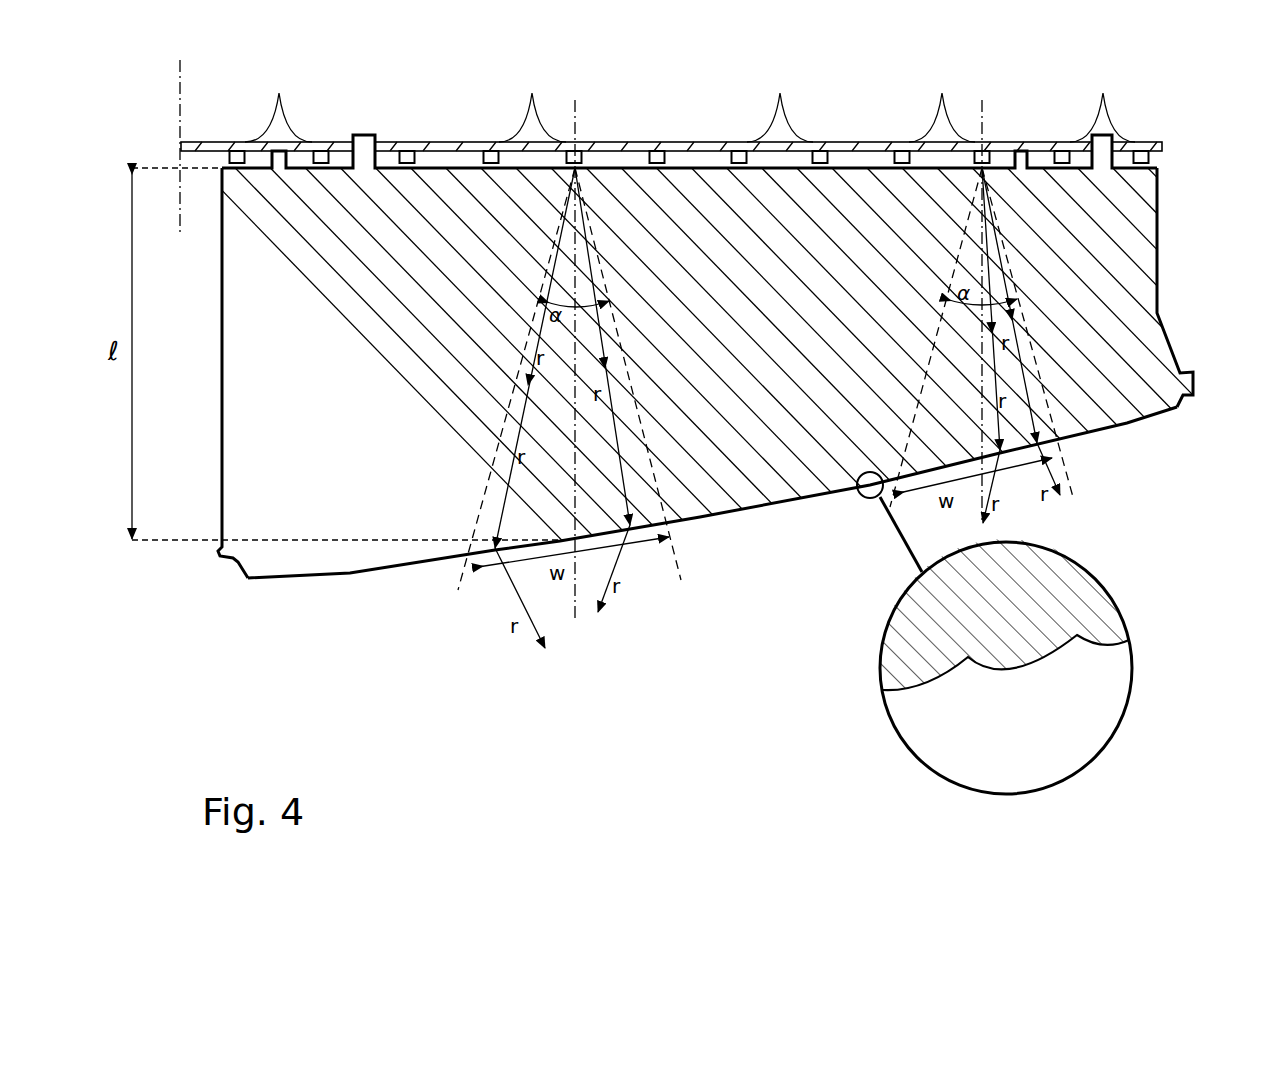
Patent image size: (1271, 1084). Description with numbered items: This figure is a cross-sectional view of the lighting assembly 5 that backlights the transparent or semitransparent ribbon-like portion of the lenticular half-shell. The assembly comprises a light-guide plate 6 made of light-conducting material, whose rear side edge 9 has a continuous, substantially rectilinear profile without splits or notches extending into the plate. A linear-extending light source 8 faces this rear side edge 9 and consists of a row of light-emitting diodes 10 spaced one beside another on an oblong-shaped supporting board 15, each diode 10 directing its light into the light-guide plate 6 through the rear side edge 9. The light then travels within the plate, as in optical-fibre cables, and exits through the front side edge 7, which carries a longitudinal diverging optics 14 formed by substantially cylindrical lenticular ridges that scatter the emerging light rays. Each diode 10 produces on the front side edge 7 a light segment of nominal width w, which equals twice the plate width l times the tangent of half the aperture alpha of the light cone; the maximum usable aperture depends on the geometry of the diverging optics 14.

The lighting assembly 5 is at (1179, 139).
The light-guide plate 6 is at (247, 380).
The front side edge 7 is at (353, 578).
The linear-extending light source 8 is at (628, 139).
The rear side edge 9 is at (463, 167).
The light-emitting diodes 10 is at (690, 105).
The longitudinal diverging optics 14 is at (897, 694).
The supporting board 15 is at (218, 147).